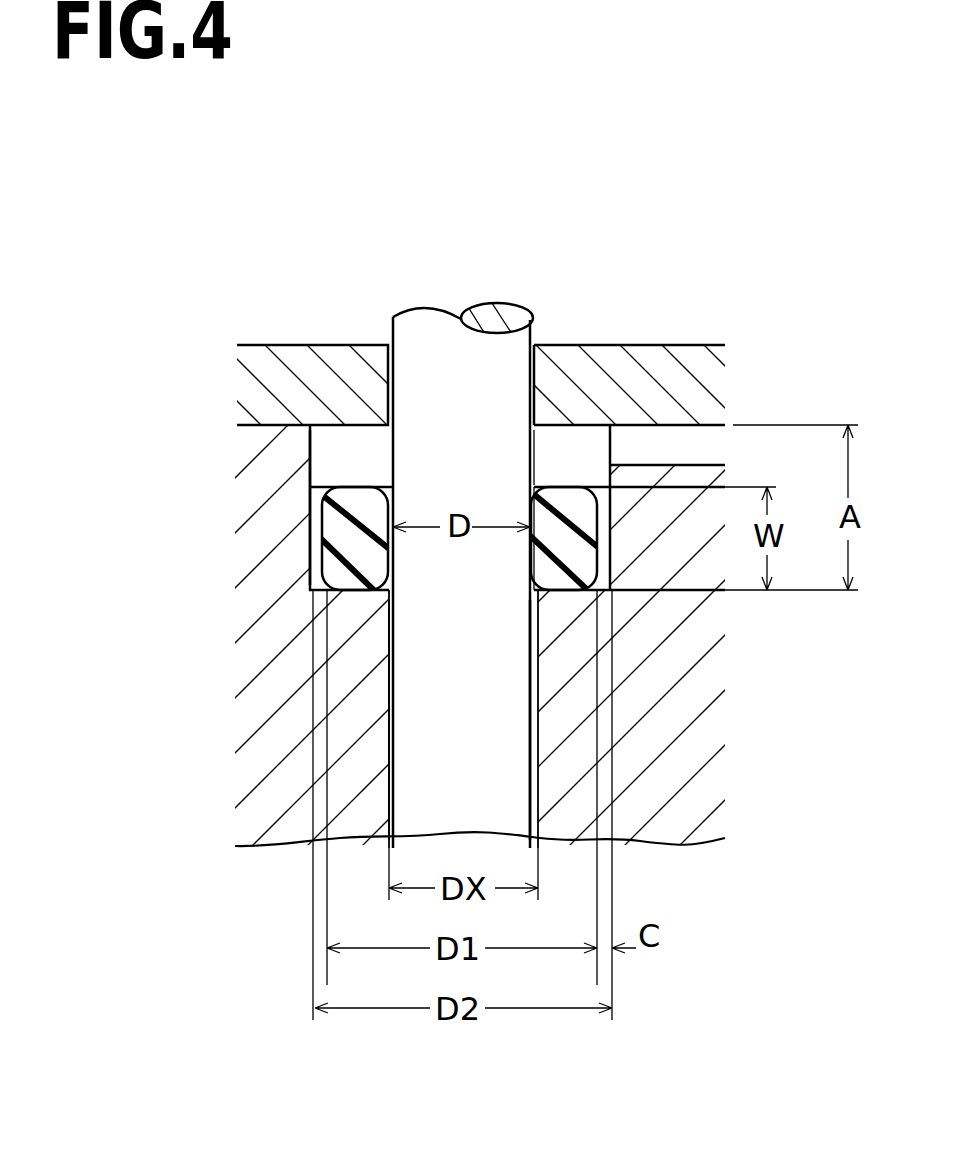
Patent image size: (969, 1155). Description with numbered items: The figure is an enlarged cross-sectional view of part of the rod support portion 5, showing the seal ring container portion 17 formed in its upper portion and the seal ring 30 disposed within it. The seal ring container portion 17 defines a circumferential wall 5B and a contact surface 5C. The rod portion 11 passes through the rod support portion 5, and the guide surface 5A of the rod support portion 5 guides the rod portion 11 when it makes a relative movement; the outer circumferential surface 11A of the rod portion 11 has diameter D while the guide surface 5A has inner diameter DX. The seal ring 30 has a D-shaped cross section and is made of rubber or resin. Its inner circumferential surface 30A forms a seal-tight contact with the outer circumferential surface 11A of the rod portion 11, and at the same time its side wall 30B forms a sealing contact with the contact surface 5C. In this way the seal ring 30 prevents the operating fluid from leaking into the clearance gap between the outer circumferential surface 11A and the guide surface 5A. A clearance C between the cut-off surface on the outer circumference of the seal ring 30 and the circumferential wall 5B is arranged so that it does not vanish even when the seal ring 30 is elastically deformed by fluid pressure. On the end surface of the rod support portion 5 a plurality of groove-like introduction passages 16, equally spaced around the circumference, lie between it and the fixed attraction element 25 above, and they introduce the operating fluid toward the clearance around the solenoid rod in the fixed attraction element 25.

The rod support portion 5 is at (680, 643).
The guide surface 5A is at (397, 667).
The circumferential wall 5B is at (313, 482).
The contact surface 5C is at (535, 481).
The rod portion 11 is at (493, 745).
The outer circumferential surface 11A is at (537, 786).
The introduction passage 16 is at (668, 443).
The seal ring container portion 17 is at (558, 478).
The fixed attraction element 25 is at (620, 372).
The seal ring 30 is at (322, 530).
The inner circumferential surface 30A is at (532, 545).
The side wall 30B is at (343, 593).